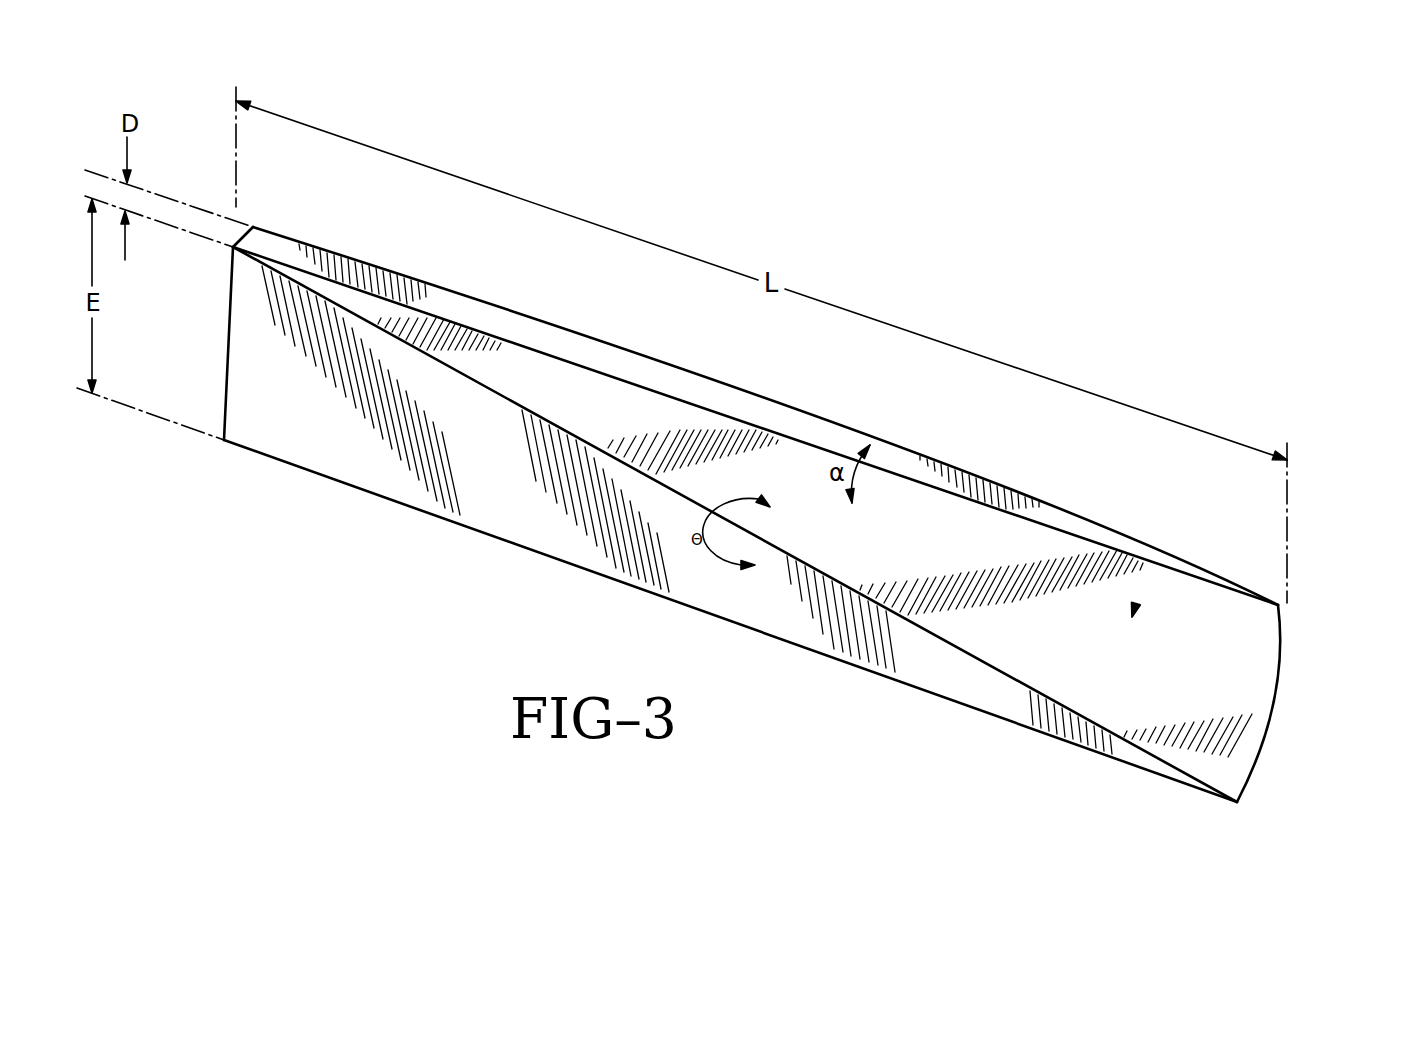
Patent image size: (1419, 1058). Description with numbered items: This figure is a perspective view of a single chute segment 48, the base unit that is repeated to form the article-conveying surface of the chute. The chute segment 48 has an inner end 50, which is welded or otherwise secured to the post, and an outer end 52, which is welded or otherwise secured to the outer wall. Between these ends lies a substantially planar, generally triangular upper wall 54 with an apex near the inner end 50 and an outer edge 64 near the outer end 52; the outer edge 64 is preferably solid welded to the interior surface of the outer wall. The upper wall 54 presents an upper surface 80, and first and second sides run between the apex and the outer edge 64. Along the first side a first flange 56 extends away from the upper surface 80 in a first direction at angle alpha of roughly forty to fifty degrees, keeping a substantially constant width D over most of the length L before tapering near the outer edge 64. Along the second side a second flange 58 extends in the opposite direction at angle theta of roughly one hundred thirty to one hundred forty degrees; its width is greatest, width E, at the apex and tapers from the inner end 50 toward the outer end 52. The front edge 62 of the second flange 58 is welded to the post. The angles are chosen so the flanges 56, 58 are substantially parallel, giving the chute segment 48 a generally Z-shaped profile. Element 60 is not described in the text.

The chute segment 48 is at (477, 567).
The inner end 50 is at (213, 320).
The outer end 52 is at (1298, 647).
The upper wall 54 is at (1033, 643).
The first flange 56 is at (1070, 517).
The second flange 58 is at (920, 662).
The top edge corner 60 is at (240, 232).
The front edge 62 is at (227, 362).
The outer edge 64 is at (1276, 697).
The upper surface 80 is at (1136, 604).